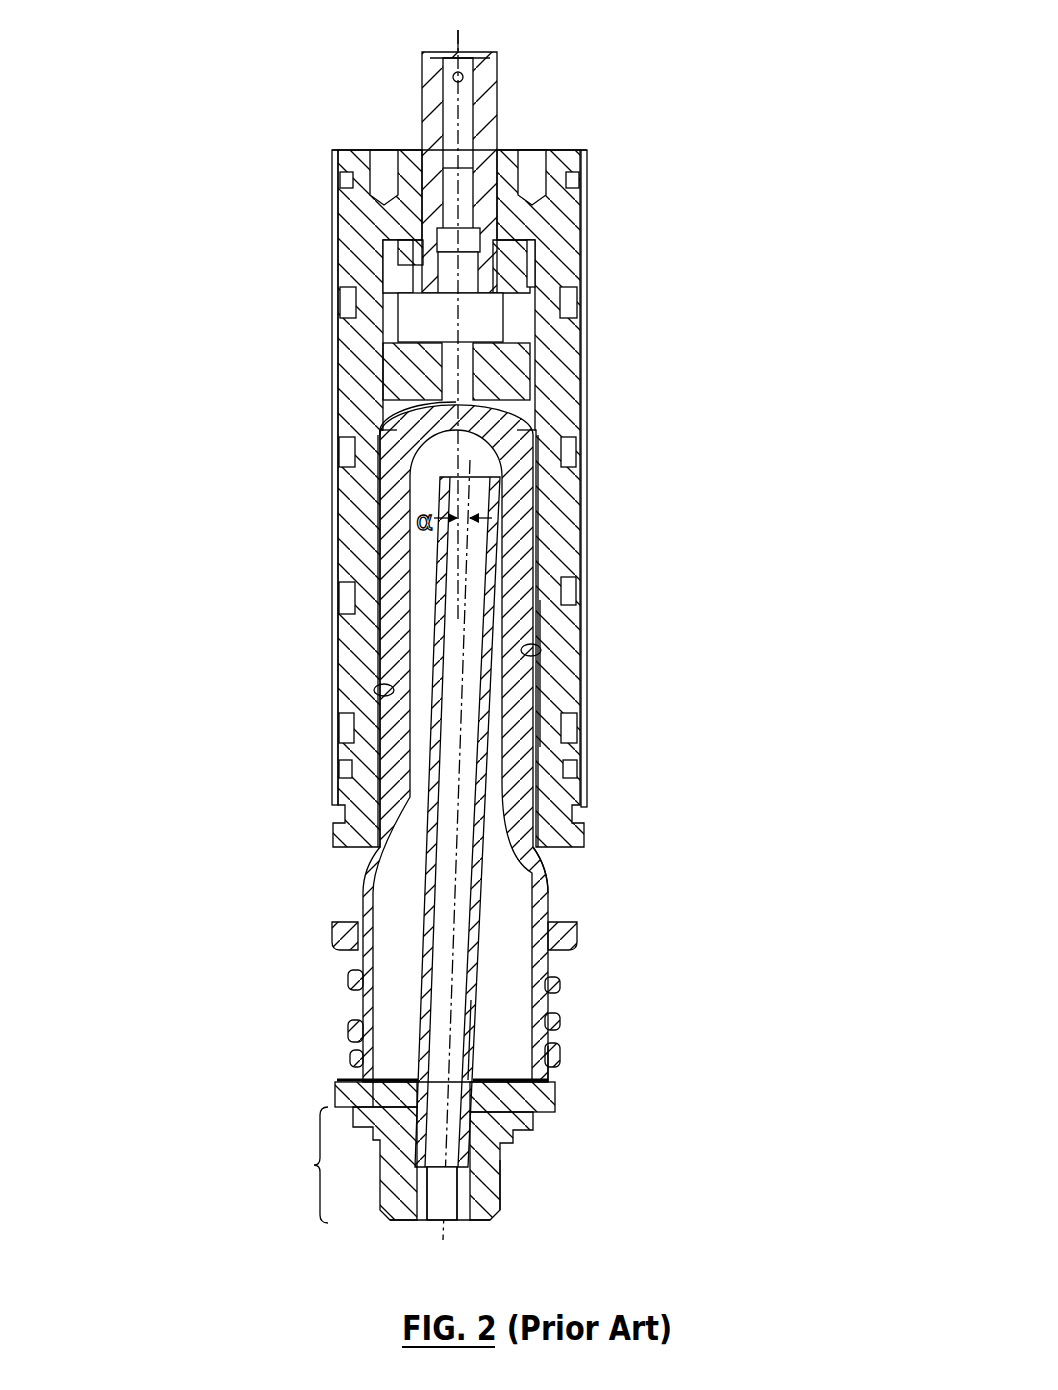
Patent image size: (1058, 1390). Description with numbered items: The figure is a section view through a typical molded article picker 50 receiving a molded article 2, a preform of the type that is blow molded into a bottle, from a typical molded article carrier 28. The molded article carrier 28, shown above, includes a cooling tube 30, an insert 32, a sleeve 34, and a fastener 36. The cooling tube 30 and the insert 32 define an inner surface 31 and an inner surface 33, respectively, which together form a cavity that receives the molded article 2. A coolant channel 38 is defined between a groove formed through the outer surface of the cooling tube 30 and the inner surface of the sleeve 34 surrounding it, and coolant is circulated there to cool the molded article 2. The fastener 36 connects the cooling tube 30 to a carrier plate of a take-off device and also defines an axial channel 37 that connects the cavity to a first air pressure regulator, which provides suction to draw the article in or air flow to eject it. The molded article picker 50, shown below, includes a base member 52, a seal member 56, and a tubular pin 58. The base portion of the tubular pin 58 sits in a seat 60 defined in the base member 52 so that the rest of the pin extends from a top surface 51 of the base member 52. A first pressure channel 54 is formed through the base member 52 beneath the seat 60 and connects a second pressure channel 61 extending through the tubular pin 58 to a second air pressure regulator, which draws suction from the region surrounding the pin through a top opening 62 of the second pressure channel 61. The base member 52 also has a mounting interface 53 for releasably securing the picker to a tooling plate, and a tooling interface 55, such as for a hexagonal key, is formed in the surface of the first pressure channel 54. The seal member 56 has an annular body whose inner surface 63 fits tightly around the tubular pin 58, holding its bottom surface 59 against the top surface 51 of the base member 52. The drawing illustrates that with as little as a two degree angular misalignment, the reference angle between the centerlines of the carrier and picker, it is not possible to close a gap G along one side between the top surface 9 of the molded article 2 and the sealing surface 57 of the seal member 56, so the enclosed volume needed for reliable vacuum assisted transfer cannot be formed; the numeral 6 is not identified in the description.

The molded article 2 is at (523, 553).
The housing inner surface 6 is at (538, 695).
The top surface 9 is at (500, 1113).
The molded article carrier 28 is at (620, 205).
The cooling tube 30 is at (562, 262).
The inner surface 31 is at (390, 690).
The insert 32 is at (505, 360).
The inner surface 33 is at (538, 400).
The sleeve 34 is at (583, 480).
The fastener 36 is at (487, 97).
The axial channel 37 is at (462, 50).
The coolant channel 38 is at (568, 590).
The molded article picker 50 is at (535, 1208).
The top surface 51 is at (360, 1082).
The base member 52 is at (500, 1128).
The mounting interface 53 is at (347, 1165).
The first pressure channel 54 is at (433, 1210).
The tooling interface 55 is at (452, 1210).
The seal member 56 is at (552, 1103).
The sealing surface 57 is at (548, 1085).
The tubular pin 58 is at (497, 862).
The bottom surface 59 is at (385, 1080).
The seat 60 is at (493, 1153).
The second pressure channel 61 is at (465, 955).
The top opening 62 is at (420, 410).
The inner surface 63 is at (463, 1095).
The gap G is at (555, 1082).